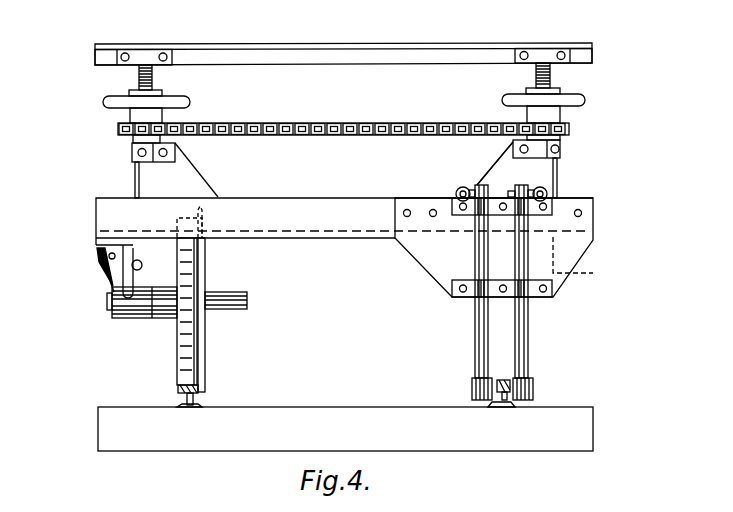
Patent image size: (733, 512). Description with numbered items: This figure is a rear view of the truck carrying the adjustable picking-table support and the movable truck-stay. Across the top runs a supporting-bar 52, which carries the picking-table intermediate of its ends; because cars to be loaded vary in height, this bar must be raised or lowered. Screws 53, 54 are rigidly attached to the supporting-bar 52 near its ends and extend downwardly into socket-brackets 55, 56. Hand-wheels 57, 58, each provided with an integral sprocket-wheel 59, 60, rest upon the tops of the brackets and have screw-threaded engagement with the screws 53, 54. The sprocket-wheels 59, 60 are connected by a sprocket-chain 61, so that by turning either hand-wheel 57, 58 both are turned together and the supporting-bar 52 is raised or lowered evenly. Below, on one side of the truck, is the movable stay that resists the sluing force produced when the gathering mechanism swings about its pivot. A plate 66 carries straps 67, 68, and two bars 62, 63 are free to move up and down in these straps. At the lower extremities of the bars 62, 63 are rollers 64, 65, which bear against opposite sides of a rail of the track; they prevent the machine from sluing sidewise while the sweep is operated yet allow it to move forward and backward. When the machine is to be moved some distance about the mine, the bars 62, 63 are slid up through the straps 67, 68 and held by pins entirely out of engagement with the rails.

The supporting-bar 52 is at (400, 53).
The screw 53 is at (152, 82).
The screw 54 is at (550, 78).
The socket-bracket 55 is at (178, 175).
The socket-bracket 56 is at (493, 167).
The hand-wheel 57 is at (103, 101).
The hand-wheel 58 is at (585, 100).
The sprocket-wheel 59 is at (128, 137).
The sprocket-wheel 60 is at (561, 134).
The sprocket-chain 61 is at (345, 118).
The bar 62 is at (476, 330).
The bar 63 is at (543, 338).
The roller 64 is at (472, 387).
The roller 65 is at (533, 386).
The plate 66 is at (494, 247).
The strap 67 is at (567, 261).
The strap 68 is at (547, 203).